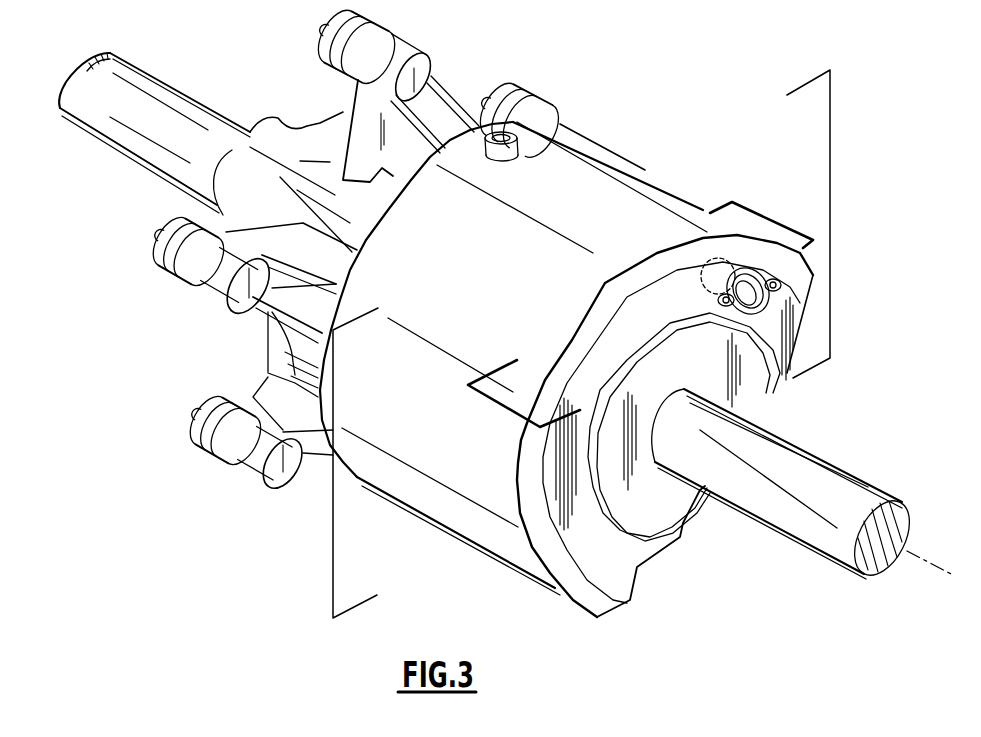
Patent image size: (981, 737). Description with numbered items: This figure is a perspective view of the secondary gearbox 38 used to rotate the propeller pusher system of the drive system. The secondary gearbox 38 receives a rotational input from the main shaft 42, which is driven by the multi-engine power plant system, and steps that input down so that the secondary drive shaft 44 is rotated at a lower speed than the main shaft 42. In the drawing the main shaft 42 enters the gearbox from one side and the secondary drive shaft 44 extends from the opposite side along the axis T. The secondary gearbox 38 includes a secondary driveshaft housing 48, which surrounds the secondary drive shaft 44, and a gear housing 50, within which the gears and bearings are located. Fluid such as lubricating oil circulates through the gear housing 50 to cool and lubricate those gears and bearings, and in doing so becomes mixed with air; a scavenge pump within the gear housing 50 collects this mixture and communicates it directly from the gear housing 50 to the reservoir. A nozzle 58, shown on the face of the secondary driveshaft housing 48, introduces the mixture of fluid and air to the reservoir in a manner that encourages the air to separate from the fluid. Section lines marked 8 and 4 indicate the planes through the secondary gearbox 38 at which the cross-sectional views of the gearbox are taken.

The secondary gearbox 38 is at (710, 152).
The main shaft 42 is at (160, 90).
The secondary drive shaft 44 is at (843, 475).
The secondary driveshaft housing 48 is at (797, 313).
The gear housing 50 is at (370, 182).
The nozzle 58 is at (798, 330).
The section line 8- 8 is at (810, 245).
The section line 4- 4 is at (830, 213).
The shaft axis T is at (938, 575).